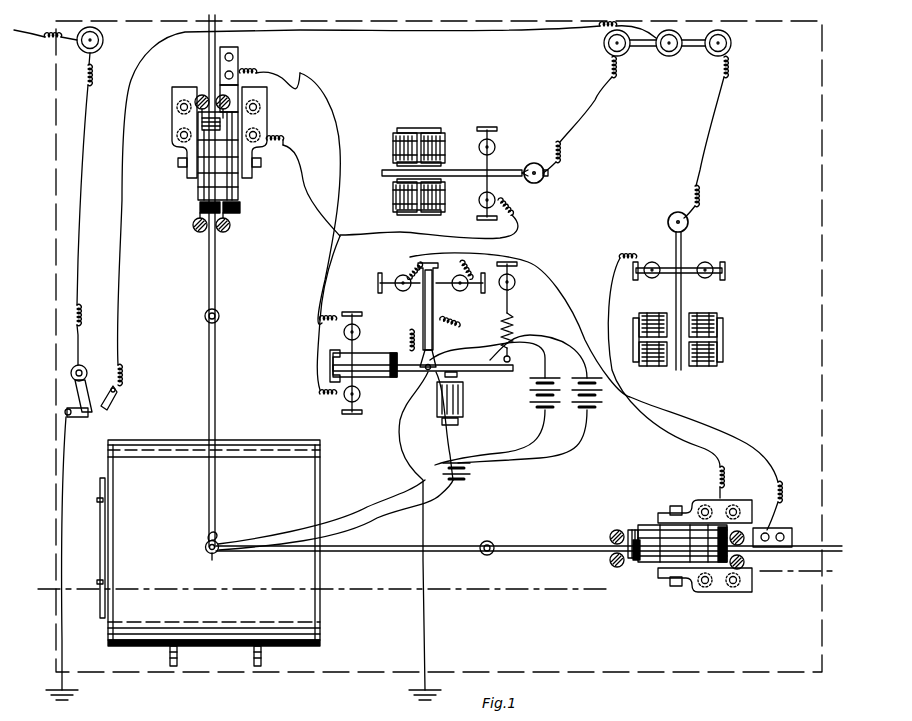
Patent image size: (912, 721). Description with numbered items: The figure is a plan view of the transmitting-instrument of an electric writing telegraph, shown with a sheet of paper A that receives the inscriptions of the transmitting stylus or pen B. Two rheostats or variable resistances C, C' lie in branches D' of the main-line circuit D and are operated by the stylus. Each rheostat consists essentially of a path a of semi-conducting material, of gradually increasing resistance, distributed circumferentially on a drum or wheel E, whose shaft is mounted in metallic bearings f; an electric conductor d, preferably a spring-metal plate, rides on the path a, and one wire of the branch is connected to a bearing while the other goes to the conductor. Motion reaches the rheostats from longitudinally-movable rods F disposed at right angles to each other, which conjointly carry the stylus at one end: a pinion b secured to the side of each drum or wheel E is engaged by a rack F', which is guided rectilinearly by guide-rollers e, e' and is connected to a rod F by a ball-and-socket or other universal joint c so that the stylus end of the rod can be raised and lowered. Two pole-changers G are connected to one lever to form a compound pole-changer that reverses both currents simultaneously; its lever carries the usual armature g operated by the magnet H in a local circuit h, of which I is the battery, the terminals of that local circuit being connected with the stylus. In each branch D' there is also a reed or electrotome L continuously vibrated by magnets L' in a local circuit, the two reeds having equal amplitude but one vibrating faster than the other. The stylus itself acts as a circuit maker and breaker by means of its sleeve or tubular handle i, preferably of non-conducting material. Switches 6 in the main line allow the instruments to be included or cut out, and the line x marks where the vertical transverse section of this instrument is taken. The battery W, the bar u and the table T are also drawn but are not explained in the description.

The sheet of paper A is at (214, 553).
The transmitting stylus or pen B is at (215, 540).
The rheostat C is at (682, 565).
The rheostat C' is at (201, 144).
The main-line circuit D is at (545, 335).
The branch of main-line circuit D' is at (530, 277).
The drum or wheel E is at (194, 170).
The longitudinally-movable rod F is at (200, 281).
The rack F' is at (513, 402).
The pole-changer G is at (423, 336).
The magnet H is at (464, 400).
The battery I is at (471, 473).
The reed or electrotome L is at (542, 217).
The magnets L' is at (544, 258).
The table T is at (503, 630).
The battery W is at (566, 402).
The path of semi-conducting material a is at (240, 207).
The pinion b is at (660, 556).
The universal joint c is at (349, 432).
The electric conductor d is at (240, 83).
The guide-roller e is at (469, 319).
The guide-roller e' is at (408, 350).
The metallic bearing f is at (172, 130).
The armature g is at (458, 375).
The local circuit h is at (335, 515).
The sleeve or tubular handle i is at (209, 563).
The guide bar u is at (100, 542).
The section line x is at (437, 579).
The switch 6 is at (667, 51).